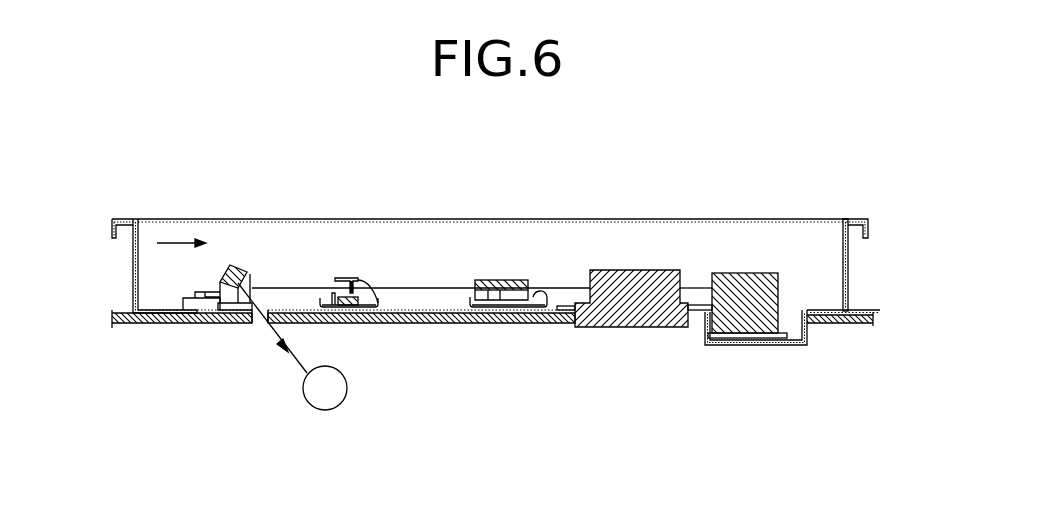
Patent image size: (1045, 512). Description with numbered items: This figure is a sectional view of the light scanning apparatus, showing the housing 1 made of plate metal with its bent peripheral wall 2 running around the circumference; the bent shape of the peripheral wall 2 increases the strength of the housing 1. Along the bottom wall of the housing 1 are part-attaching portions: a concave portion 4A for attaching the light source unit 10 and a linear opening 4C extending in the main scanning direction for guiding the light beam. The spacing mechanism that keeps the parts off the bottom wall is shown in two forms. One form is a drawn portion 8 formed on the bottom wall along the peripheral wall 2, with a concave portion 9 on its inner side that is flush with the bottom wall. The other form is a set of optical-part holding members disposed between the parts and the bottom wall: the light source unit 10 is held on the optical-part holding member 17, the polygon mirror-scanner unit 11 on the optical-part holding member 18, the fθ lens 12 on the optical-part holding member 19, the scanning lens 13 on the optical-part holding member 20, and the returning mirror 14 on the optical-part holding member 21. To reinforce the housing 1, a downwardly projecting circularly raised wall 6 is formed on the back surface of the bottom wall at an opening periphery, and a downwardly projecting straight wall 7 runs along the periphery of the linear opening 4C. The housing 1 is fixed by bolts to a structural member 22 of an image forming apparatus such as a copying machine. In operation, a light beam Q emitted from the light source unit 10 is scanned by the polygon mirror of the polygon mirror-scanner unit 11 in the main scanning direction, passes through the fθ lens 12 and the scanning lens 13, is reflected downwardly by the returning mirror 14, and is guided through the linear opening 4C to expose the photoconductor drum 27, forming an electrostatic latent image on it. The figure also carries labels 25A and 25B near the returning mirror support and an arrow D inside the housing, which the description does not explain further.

The housing 1 is at (854, 270).
The peripheral wall 2 is at (133, 285).
The concave portion 4A is at (800, 334).
The linear opening 4C is at (258, 327).
The circularly raised wall 6 is at (565, 326).
The straight wall 7 is at (253, 327).
The drawn portion 8 is at (347, 327).
The concave portion 9 is at (533, 323).
The light source unit 10 is at (747, 282).
The polygon mirror-scanner unit 11 is at (637, 278).
The fθ lens 12 is at (507, 281).
The scanning lens 13 is at (350, 277).
The returning mirror 14 is at (232, 266).
The optical-part holding member 17 is at (742, 338).
The optical-part holding member 18 is at (557, 323).
The optical-part holding member 19 is at (492, 323).
The optical-part holding member 20 is at (370, 327).
The optical-part holding member 21 is at (198, 327).
The structural member 22 is at (142, 327).
The support post 25A is at (252, 276).
The hook 25B is at (200, 290).
The photoconductor drum 27 is at (326, 397).
The insertion direction D is at (180, 242).
The light beam Q is at (430, 283).